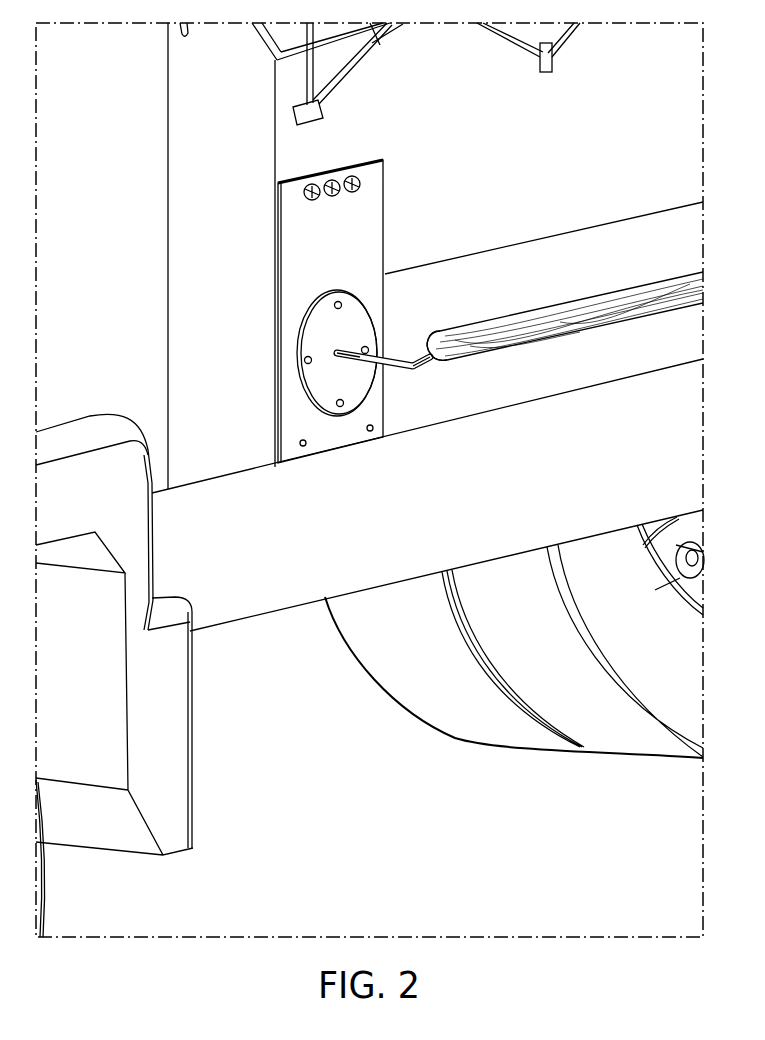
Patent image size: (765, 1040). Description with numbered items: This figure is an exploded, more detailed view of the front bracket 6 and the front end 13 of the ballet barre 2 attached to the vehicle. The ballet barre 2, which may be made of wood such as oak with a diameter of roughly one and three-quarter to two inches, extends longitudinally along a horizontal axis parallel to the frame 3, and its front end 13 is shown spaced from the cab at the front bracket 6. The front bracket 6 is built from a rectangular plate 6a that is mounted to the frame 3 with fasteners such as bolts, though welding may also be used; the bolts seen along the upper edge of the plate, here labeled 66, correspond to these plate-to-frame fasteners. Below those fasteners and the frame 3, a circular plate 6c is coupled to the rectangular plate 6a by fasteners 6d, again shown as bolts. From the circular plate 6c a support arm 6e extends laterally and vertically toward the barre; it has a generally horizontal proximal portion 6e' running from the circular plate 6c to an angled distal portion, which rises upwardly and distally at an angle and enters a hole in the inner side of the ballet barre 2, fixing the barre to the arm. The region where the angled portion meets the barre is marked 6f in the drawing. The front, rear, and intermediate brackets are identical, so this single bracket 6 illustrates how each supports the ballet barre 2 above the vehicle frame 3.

The ballet barre 2 is at (560, 312).
The frame 3 is at (198, 440).
The front bracket 6 is at (345, 282).
The rectangular plate 6a is at (292, 228).
The circular plate 6c is at (315, 333).
The fasteners 6d is at (340, 404).
The support arm 6e is at (383, 388).
The horizontal proximal portion 6e' is at (381, 318).
The rod bend 6f is at (427, 360).
The front end 13 is at (428, 330).
The fasteners 66 is at (338, 174).